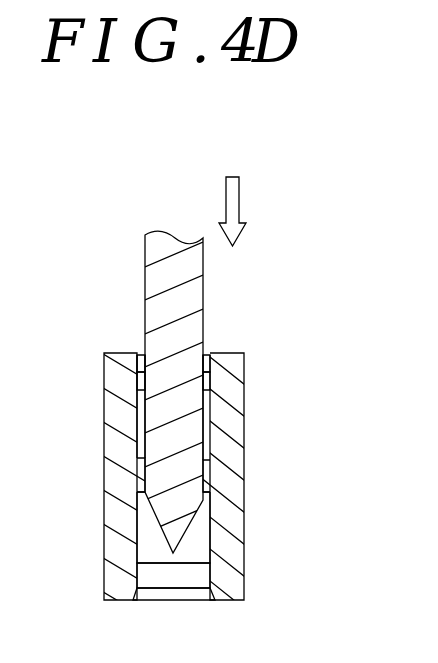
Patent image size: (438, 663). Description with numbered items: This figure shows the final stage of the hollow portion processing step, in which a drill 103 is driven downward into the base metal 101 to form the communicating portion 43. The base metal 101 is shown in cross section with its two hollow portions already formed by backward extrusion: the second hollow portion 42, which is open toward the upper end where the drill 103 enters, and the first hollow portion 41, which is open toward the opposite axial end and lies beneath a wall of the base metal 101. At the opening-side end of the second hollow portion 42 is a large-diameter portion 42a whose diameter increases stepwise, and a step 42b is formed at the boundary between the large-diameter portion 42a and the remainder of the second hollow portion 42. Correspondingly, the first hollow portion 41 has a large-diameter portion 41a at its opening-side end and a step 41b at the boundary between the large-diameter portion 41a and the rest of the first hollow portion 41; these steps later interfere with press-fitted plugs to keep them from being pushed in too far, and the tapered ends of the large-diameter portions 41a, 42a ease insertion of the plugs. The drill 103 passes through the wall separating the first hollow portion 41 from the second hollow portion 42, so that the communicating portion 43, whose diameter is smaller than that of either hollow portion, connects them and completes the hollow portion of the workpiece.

The drill 103 is at (183, 319).
The base metal 101 is at (225, 487).
The second hollow portion 42 is at (135, 441).
The large-diameter portion 42a is at (135, 371).
The step 42b is at (137, 391).
The communicating portion 43 is at (137, 465).
The first hollow portion 41 is at (134, 503).
The step 41b is at (137, 565).
The large-diameter portion 41a is at (135, 578).